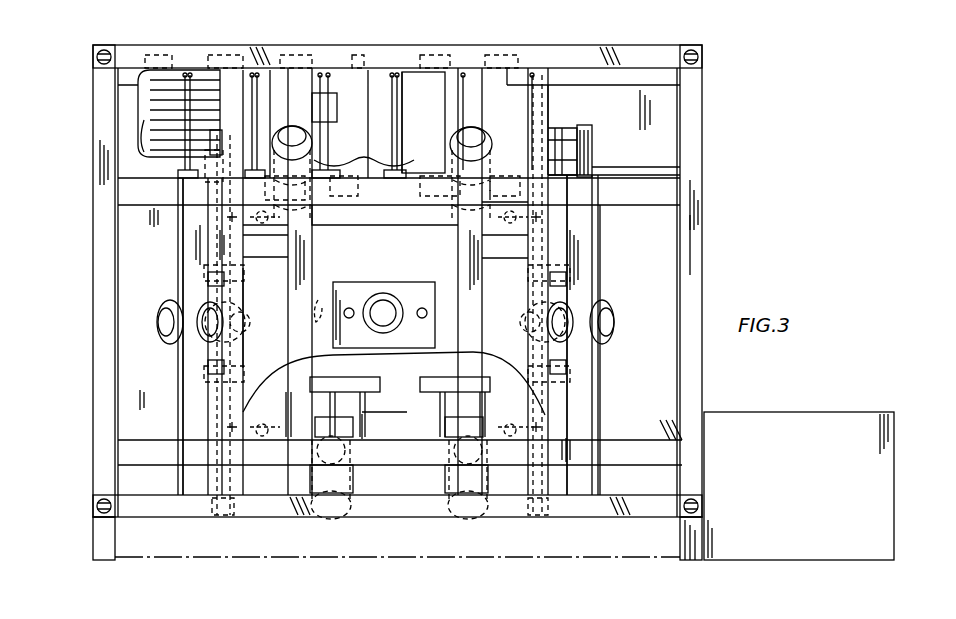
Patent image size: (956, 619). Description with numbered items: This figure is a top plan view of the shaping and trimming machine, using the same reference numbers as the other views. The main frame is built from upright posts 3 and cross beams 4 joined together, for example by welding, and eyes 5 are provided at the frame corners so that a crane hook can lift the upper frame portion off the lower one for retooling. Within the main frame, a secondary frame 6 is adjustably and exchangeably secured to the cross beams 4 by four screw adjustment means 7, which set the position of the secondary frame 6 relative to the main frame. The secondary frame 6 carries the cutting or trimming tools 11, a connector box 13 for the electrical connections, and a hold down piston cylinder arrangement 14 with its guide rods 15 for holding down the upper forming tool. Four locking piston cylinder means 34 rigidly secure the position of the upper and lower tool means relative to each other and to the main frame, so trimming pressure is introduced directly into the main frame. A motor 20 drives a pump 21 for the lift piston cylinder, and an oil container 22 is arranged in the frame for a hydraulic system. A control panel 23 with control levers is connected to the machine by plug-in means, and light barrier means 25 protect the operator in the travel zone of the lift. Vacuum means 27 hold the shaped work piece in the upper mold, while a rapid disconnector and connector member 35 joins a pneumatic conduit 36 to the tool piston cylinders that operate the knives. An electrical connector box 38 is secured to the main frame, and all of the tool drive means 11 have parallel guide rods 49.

The upright posts 3 is at (92, 62).
The cross beams 4 is at (591, 48).
The eyes 5 is at (106, 52).
The secondary frame 6 is at (196, 244).
The screw adjustment means 7 is at (230, 218).
The cutting or trimming tools 11 is at (172, 326).
The connector box 13 is at (592, 150).
The hold down piston cylinder arrangement 14 is at (383, 290).
The guide rods 15 is at (348, 308).
The motor 20 is at (171, 124).
The pump 21 is at (338, 102).
The oil container 22 is at (435, 121).
The control panel 23 is at (805, 480).
The light barrier means 25 is at (110, 558).
The vacuum means 27 is at (296, 56).
The locking piston cylinder means 34 is at (570, 130).
The rapid disconnector and connector member 35 is at (396, 70).
The pneumatic conduit 36 is at (364, 147).
The electrical connector box 38 is at (642, 100).
The parallel guide rods 49 is at (388, 188).